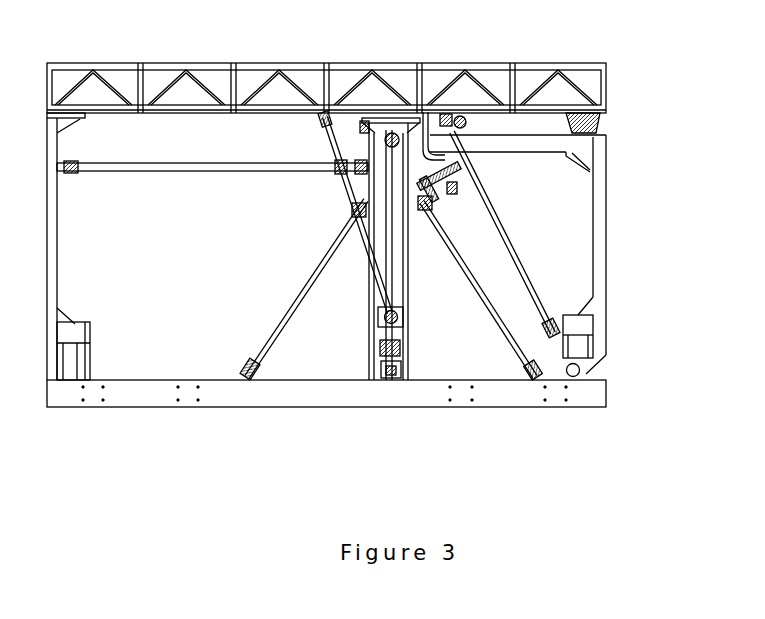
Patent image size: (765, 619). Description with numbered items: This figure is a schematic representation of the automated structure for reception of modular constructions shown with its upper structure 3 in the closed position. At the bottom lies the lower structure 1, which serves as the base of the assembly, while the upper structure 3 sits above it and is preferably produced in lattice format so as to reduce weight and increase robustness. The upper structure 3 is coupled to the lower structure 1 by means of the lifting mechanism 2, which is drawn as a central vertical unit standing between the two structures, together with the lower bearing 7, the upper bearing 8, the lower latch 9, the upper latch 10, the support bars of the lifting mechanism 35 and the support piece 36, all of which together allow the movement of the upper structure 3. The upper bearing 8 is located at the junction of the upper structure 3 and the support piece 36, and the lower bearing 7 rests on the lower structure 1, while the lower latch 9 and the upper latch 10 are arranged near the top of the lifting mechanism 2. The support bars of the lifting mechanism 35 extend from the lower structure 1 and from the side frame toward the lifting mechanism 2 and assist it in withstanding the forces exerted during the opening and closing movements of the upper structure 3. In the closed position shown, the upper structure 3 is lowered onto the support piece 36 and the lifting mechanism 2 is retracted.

The lower structure 1 is at (325, 405).
The lifting mechanism 2 is at (397, 316).
The upper structure 3 is at (337, 65).
The lower bearing 7 is at (582, 372).
The upper bearing 8 is at (598, 122).
The lower latch 9 is at (443, 173).
The upper latch 10 is at (447, 117).
The support bars of the lifting mechanism 35 is at (167, 173).
The support piece 36 is at (598, 173).